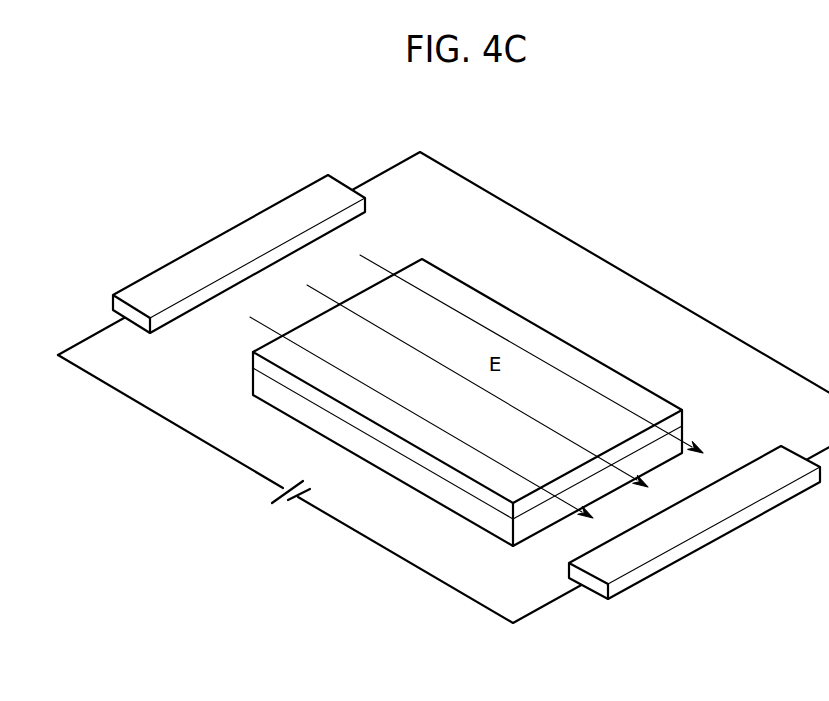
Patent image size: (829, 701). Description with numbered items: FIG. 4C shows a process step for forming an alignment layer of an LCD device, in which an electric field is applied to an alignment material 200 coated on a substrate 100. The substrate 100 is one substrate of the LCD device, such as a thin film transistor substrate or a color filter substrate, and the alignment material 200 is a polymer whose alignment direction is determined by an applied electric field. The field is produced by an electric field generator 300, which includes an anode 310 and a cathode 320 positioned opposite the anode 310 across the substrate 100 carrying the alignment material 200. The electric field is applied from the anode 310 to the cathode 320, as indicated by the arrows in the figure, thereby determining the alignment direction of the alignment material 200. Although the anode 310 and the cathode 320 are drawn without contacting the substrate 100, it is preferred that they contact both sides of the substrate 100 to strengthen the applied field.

The substrate 100 is at (253, 392).
The alignment material 200 is at (253, 363).
The electric field generator 300 is at (277, 515).
The anode 310 is at (203, 253).
The cathode 320 is at (735, 522).